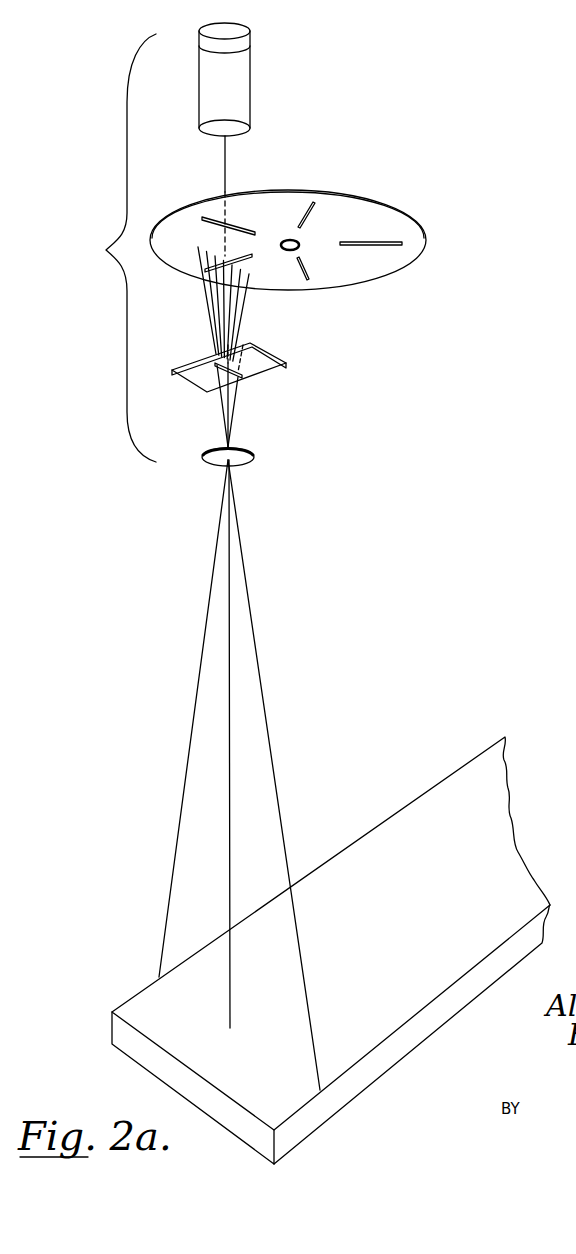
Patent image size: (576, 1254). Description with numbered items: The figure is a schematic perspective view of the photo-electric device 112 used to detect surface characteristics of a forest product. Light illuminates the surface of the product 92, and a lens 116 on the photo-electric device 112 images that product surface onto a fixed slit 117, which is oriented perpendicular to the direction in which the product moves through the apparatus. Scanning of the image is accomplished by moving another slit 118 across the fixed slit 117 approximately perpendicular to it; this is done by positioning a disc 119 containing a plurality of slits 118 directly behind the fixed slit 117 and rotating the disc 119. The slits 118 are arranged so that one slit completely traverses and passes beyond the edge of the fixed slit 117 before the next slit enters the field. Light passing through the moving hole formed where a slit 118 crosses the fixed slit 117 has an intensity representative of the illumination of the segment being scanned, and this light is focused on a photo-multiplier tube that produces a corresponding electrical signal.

The product 92 is at (136, 994).
The photo-electric device 112 is at (108, 248).
The lens 116 is at (255, 455).
The fixed slit 117 is at (233, 377).
The slits 118 is at (297, 226).
The disc 119 is at (426, 231).